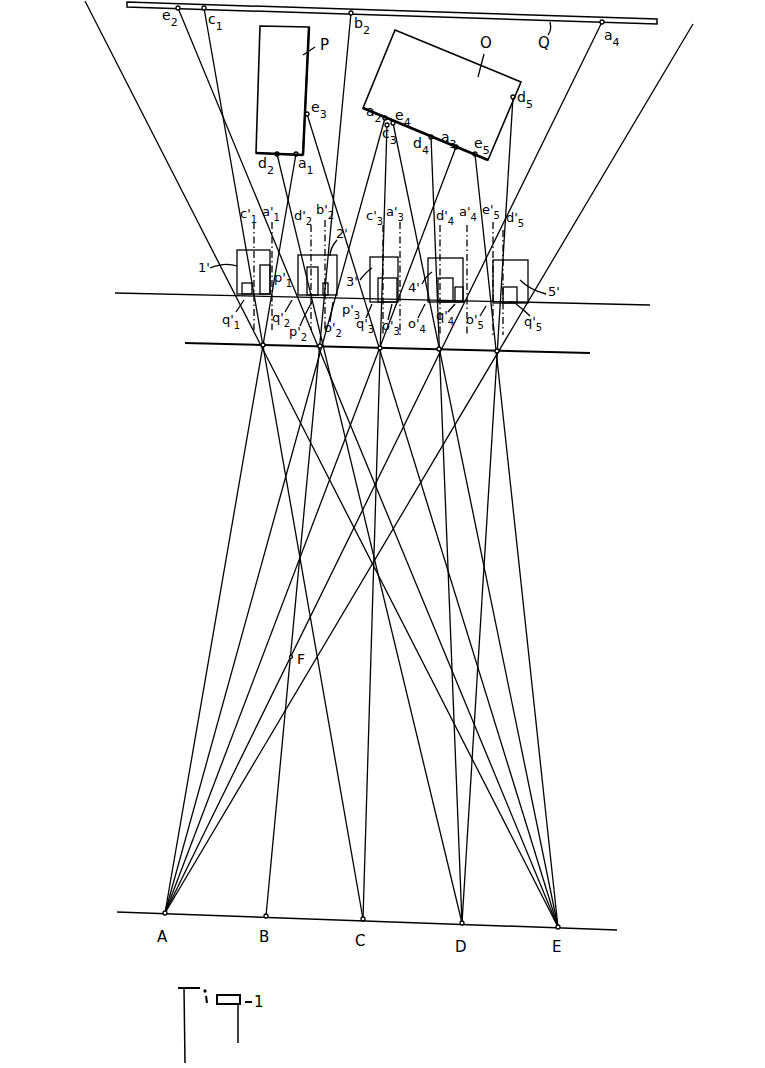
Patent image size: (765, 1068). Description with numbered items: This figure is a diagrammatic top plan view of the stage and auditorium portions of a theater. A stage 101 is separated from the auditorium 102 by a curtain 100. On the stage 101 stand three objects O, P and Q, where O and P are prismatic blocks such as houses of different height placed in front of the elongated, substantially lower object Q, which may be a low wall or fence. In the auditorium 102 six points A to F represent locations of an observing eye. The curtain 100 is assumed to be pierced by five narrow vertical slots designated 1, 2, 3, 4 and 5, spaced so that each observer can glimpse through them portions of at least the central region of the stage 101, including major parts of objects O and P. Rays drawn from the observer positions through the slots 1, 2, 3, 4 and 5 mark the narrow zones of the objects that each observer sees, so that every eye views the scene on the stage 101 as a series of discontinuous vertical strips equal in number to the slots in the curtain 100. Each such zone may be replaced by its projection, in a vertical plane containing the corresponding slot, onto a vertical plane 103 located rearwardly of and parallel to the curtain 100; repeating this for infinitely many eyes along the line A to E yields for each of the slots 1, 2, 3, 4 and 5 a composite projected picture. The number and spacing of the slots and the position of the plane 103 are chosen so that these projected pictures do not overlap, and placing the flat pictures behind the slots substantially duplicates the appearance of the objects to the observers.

The slot 1 is at (257, 354).
The slot 2 is at (314, 355).
The slot 3 is at (374, 357).
The slot 4 is at (445, 358).
The slot 5 is at (503, 359).
The curtain 100 is at (588, 354).
The stage 101 is at (630, 163).
The auditorium 102 is at (571, 628).
The vertical plane 103 is at (648, 304).